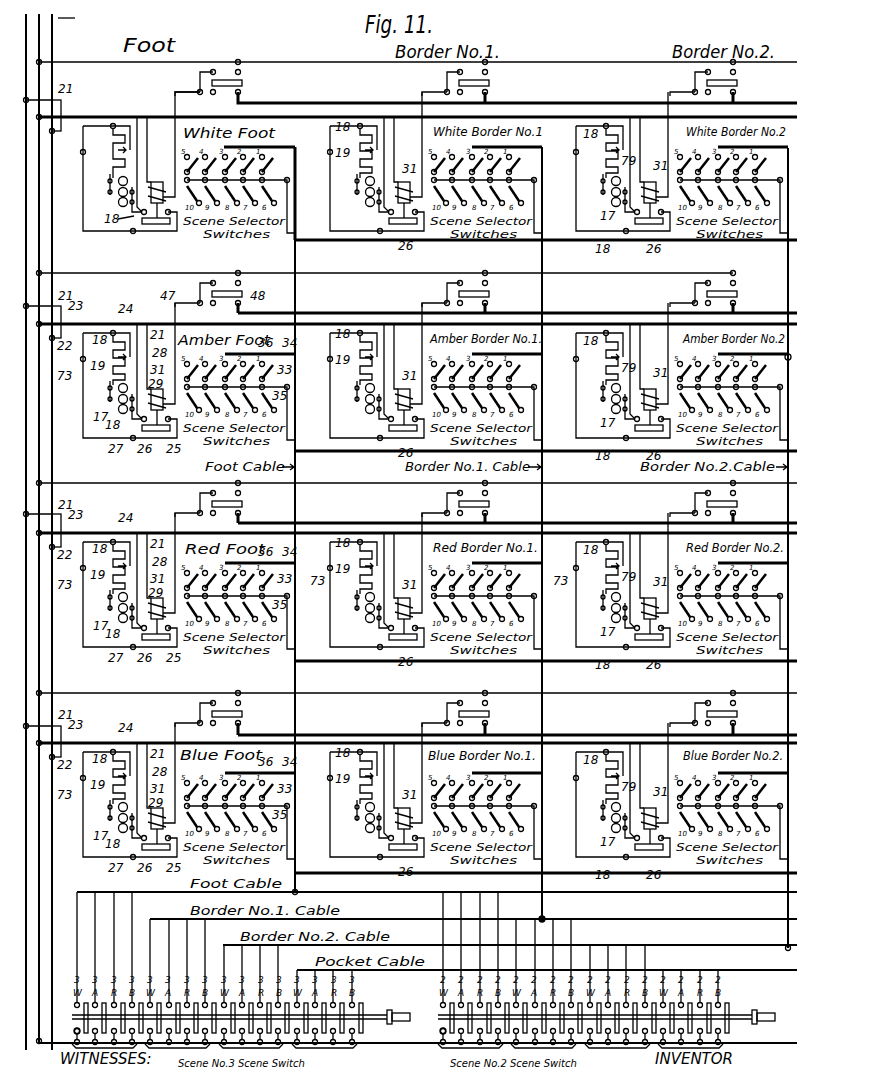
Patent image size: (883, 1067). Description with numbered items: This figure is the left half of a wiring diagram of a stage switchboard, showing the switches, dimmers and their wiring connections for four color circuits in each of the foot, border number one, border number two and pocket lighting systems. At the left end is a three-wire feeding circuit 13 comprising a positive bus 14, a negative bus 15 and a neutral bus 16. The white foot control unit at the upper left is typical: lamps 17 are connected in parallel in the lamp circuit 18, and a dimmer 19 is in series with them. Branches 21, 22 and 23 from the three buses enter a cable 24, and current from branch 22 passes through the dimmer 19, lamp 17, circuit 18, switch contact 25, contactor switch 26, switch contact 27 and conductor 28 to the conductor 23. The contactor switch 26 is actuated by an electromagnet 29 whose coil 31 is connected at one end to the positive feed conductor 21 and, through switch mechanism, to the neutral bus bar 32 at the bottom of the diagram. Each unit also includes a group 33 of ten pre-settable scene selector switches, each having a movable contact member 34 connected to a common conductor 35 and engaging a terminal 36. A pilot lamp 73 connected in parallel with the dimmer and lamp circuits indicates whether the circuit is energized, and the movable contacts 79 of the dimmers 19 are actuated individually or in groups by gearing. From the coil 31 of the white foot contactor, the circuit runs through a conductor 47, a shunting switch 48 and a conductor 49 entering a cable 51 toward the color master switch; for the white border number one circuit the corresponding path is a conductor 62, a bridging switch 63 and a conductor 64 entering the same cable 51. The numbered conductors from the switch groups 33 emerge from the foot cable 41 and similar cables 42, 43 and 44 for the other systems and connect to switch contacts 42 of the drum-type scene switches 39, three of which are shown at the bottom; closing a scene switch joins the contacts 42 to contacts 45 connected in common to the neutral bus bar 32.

The three-wire feeding circuit 13 is at (66, 11).
The positive bus 14 is at (26, 50).
The negative bus 15 is at (52, 50).
The neutral bus 16 is at (39, 44).
The lamps 17 is at (118, 204).
The lamp circuit 18 is at (111, 132).
The dimmer 19 is at (111, 158).
The branch conductor from the positive bus 21 is at (140, 140).
The branch conductor from the negative bus 22 is at (54, 133).
The branch conductor from the neutral bus 23 is at (61, 108).
The cable 24 is at (136, 117).
The switch contact 25 is at (170, 215).
The contactor switch 26 is at (155, 225).
The switch contact 27 is at (131, 233).
The conductor 28 is at (148, 160).
The electromagnet 29 is at (158, 182).
The coil 31 is at (164, 200).
The neutral bus bar 32 is at (355, 1048).
The group of scene selector switches 33 is at (269, 169).
The contact member 34 is at (272, 157).
The common conductor 35 is at (287, 183).
The terminal 36 is at (273, 146).
The scene switch 39 is at (380, 1024).
The foot cable 41 is at (296, 299).
The switch contacts 42 is at (543, 300).
The cable 43 is at (787, 291).
The cable 44 is at (768, 965).
The contacts 45 is at (74, 1031).
The conductor 47 is at (176, 97).
The shunting switch 48 is at (226, 88).
The conductor 49 is at (240, 100).
The cable 51 is at (345, 103).
The conductor 62 is at (424, 142).
The bridging switch 63 is at (462, 90).
The conductor 64 is at (488, 100).
The pilot lamp 73 is at (81, 154).
The movable contact 79 is at (127, 152).